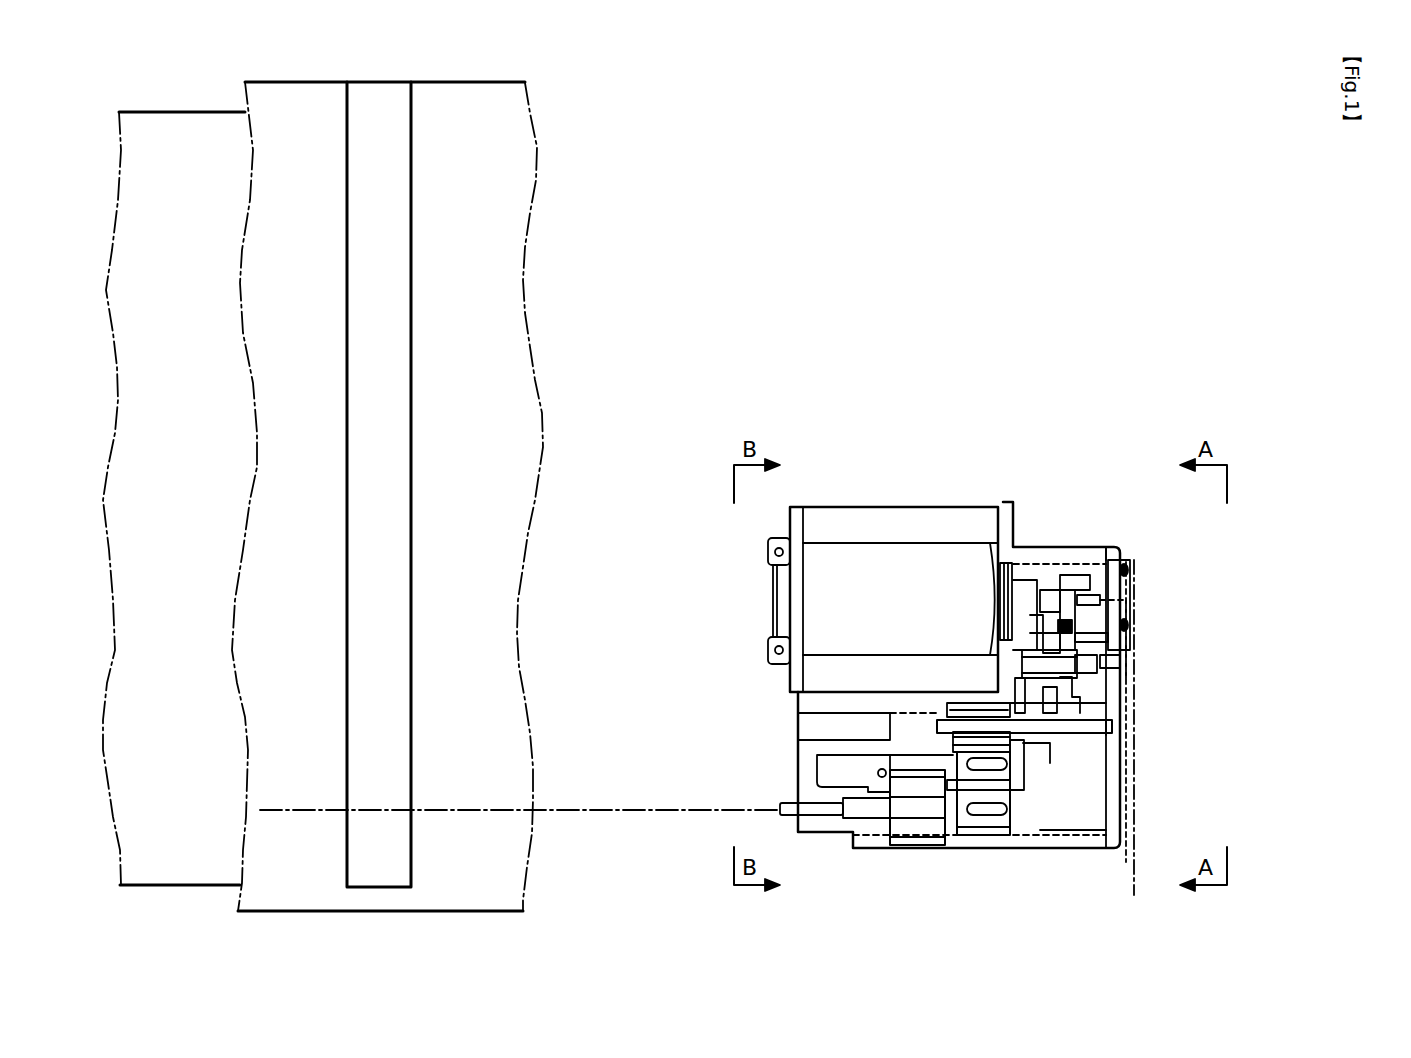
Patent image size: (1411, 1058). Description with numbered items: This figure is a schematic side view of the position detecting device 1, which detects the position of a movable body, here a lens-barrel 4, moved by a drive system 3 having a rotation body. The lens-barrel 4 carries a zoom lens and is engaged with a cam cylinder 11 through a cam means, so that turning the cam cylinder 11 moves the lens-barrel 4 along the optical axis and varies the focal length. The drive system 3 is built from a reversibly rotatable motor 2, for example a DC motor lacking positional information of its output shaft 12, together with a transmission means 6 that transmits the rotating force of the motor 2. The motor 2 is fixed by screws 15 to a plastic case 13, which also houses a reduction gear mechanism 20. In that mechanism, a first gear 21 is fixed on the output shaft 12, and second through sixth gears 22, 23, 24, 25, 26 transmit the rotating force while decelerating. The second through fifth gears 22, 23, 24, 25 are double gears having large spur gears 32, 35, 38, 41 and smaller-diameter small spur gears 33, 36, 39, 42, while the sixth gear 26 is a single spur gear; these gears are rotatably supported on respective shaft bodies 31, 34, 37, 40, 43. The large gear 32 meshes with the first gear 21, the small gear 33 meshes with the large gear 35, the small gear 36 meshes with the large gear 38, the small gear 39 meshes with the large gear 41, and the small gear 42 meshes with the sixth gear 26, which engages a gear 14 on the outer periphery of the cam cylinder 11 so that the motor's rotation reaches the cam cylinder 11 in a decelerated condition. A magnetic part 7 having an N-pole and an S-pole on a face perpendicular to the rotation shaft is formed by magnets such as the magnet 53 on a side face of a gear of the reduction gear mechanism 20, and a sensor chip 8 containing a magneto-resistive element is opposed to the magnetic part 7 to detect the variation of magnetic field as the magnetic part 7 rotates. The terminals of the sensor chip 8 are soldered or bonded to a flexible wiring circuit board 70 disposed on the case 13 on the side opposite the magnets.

The position detecting device 1 is at (1127, 447).
The motor 2 is at (877, 548).
The drive system 3 is at (1037, 510).
The lens-barrel 4 is at (148, 145).
The transmission means 6 is at (1148, 700).
The magnetic part 7 is at (1105, 540).
The sensor chip 8 is at (1128, 622).
The cam cylinder 11 is at (265, 97).
The output shaft 12 is at (1037, 597).
The case 13 is at (1048, 762).
The gear 14 is at (388, 622).
The screws 15 is at (1000, 520).
The reduction gear mechanism 20 is at (1150, 728).
The first gear 21 is at (1070, 567).
The second gear 22 is at (1110, 657).
The third gear 23 is at (1113, 682).
The fourth gear 24 is at (1100, 753).
The fifth gear 25 is at (1008, 797).
The sixth gear 26 is at (905, 842).
The shaft body 31 is at (1108, 622).
The large spur gear 32 is at (1088, 573).
The small spur gear 33 is at (1045, 595).
The shaft body 34 is at (1137, 670).
The large spur gear 35 is at (1120, 715).
The small spur gear 36 is at (1035, 622).
The shaft body 37 is at (1110, 747).
The large spur gear 38 is at (1085, 732).
The small spur gear 39 is at (970, 712).
The shaft body 40 is at (1033, 793).
The large spur gear 41 is at (975, 825).
The small spur gear 42 is at (900, 758).
The shaft body 43 is at (825, 807).
The magnet 53 is at (1128, 566).
The flexible wiring circuit board 70 is at (1130, 832).